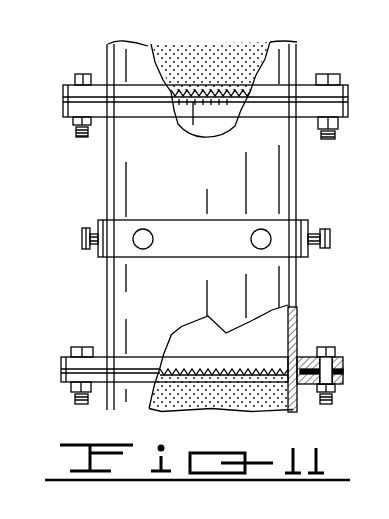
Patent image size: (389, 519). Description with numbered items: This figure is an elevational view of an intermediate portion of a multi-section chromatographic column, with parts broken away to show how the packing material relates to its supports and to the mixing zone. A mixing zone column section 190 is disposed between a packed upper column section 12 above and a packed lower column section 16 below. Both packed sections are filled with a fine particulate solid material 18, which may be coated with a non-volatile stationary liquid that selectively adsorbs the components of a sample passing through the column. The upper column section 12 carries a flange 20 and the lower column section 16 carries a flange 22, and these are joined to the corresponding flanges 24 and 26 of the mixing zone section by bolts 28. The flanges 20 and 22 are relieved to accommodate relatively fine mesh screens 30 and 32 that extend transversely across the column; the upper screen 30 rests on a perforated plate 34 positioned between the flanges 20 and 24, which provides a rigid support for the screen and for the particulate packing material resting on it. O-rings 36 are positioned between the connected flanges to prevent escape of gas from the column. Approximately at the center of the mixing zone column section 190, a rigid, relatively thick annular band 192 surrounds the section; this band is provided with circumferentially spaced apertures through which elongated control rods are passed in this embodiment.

The upper column section 12 is at (108, 47).
The lower column section 16 is at (95, 392).
The particulate solid material 18 is at (203, 41).
The flange of the upper column section 20 is at (55, 82).
The flange of the lower column section 22 is at (335, 370).
The upper flange of the mixing zone section 24 is at (55, 104).
The lower flange of the mixing zone section 26 is at (335, 350).
The bolts 28 is at (70, 74).
The upper screen 30 is at (207, 92).
The lower screen 32 is at (208, 364).
The perforated plate 34 is at (183, 124).
The O-rings 36 is at (302, 376).
The mixing zone column section 190 is at (226, 172).
The annular band 192 is at (287, 218).